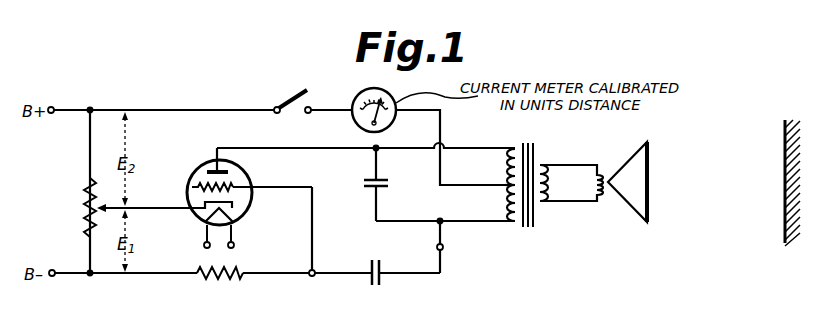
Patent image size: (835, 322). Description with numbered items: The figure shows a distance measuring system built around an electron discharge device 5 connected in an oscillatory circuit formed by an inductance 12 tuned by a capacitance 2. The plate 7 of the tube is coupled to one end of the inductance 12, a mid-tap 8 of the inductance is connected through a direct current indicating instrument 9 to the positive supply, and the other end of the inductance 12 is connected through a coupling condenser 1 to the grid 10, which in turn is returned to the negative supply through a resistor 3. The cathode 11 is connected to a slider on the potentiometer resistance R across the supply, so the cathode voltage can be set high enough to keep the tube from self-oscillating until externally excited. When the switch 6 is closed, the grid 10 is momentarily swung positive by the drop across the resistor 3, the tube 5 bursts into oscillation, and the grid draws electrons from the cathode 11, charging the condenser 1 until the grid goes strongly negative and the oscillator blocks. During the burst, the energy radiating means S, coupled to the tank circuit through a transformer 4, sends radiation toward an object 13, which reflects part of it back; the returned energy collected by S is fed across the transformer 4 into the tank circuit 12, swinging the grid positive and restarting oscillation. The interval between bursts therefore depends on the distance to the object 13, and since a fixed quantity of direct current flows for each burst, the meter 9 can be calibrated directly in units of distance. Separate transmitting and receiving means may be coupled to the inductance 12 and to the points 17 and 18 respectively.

The coupling condenser 1 is at (379, 285).
The capacitance 2 is at (389, 184).
The resistor 3 is at (222, 281).
The transformer 4 is at (541, 164).
The electron discharge device 5 is at (189, 180).
The switch 6 is at (284, 100).
The plate 7 is at (213, 164).
The mid-tap 8 is at (504, 189).
The direct current indicating instrument 9 is at (352, 119).
The grid 10 is at (191, 188).
The cathode 11 is at (236, 203).
The inductance 12 is at (487, 165).
The object 13 is at (785, 233).
The point 17 is at (444, 248).
The point 18 is at (312, 277).
The potentiometer resistance R is at (83, 208).
The energy radiating means S is at (620, 163).